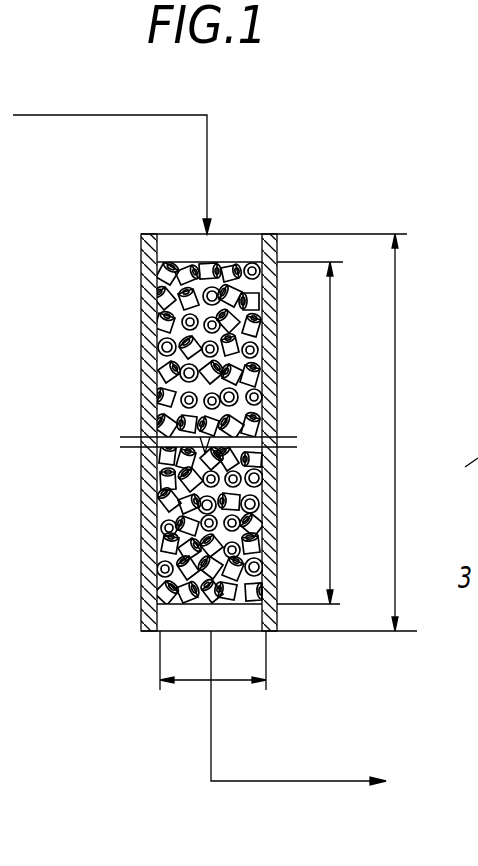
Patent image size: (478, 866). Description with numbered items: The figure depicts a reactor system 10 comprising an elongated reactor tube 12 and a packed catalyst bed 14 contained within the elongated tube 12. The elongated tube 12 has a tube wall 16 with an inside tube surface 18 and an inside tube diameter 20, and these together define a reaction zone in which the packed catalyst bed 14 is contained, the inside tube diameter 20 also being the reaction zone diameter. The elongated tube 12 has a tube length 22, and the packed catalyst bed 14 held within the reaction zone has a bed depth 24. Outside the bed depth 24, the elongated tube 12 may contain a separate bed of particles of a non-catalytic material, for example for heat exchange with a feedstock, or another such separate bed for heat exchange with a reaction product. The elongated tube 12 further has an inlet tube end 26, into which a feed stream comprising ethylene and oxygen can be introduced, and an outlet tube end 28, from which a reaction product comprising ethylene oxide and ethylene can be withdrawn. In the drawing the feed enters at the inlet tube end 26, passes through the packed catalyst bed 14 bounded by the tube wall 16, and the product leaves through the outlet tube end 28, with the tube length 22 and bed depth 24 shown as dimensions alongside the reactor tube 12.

The reactor system 10 is at (421, 177).
The elongated reactor tube 12 is at (141, 505).
The packed catalyst bed 14 is at (162, 365).
The tube wall 16 is at (270, 233).
The inside tube surface 18 is at (138, 248).
The inside tube diameter 20 is at (195, 681).
The tube length 22 is at (395, 345).
The bed depth 24 is at (331, 402).
The inlet tube end 26 is at (180, 233).
The outlet tube end 28 is at (178, 632).